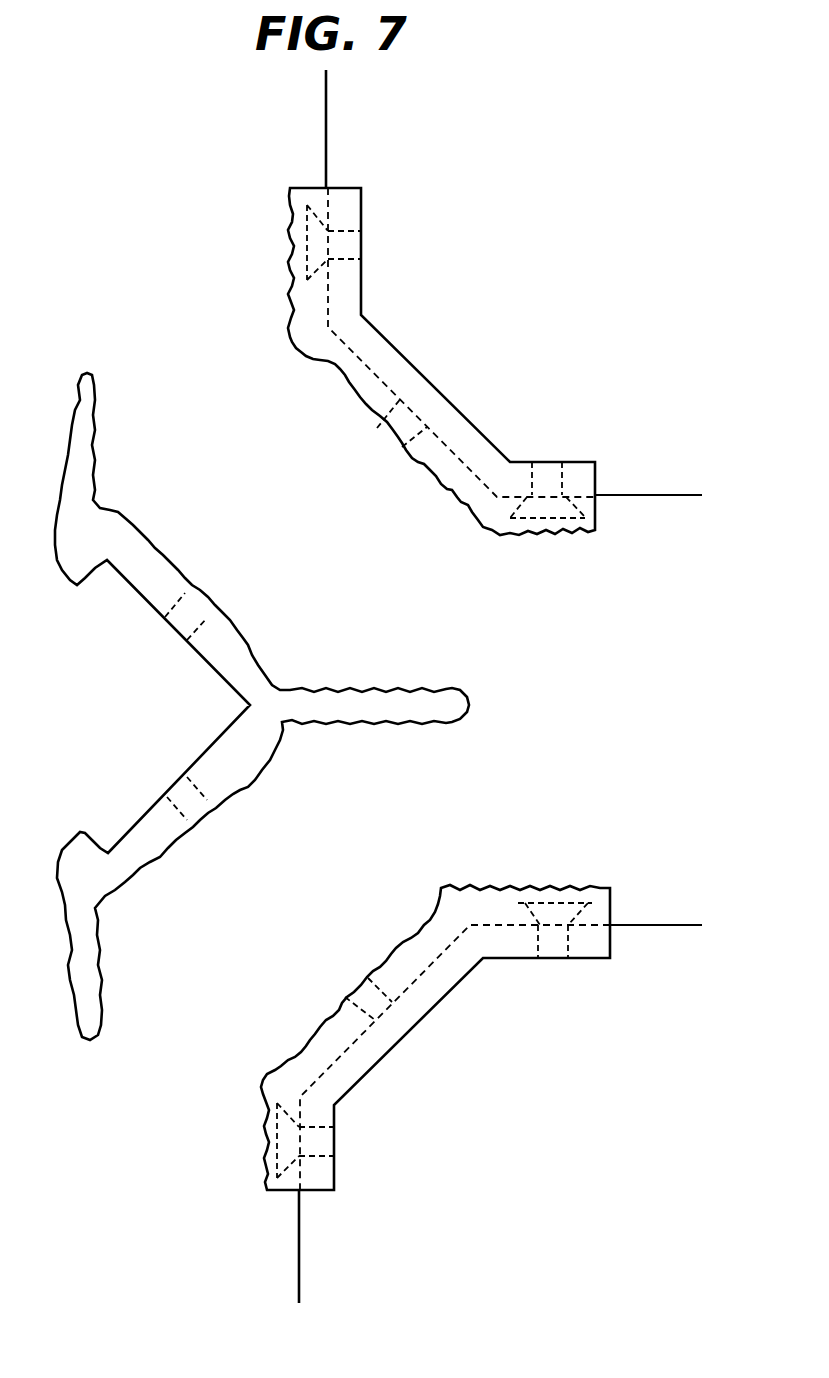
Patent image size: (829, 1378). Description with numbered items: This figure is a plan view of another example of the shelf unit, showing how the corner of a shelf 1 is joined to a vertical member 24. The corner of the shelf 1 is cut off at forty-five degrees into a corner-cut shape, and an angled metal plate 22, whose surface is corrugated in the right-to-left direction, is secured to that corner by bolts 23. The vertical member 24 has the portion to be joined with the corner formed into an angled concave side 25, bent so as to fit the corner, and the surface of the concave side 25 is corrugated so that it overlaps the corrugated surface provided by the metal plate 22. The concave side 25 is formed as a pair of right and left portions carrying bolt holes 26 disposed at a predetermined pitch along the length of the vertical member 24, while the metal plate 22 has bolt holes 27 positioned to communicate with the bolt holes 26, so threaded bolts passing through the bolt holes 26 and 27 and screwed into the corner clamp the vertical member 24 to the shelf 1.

The shelf 1 is at (342, 148).
The angled metal plate 22 is at (288, 351).
The bolts 23 is at (312, 235).
The vertical member 24 is at (218, 678).
The angled concave side 25 is at (170, 563).
The bolt holes 26 is at (190, 613).
The bolt holes 27 is at (401, 430).